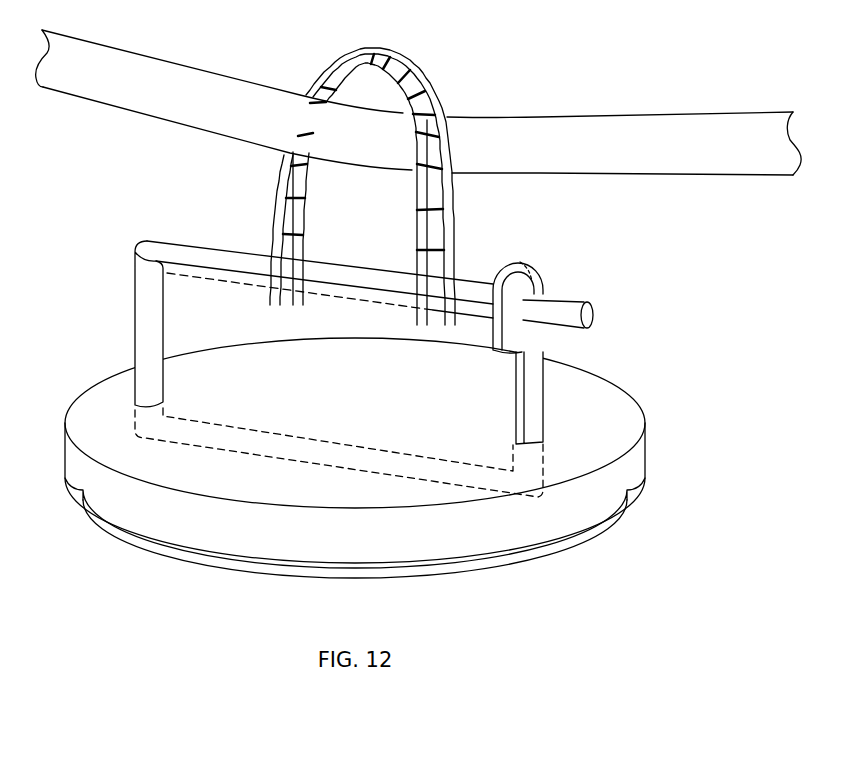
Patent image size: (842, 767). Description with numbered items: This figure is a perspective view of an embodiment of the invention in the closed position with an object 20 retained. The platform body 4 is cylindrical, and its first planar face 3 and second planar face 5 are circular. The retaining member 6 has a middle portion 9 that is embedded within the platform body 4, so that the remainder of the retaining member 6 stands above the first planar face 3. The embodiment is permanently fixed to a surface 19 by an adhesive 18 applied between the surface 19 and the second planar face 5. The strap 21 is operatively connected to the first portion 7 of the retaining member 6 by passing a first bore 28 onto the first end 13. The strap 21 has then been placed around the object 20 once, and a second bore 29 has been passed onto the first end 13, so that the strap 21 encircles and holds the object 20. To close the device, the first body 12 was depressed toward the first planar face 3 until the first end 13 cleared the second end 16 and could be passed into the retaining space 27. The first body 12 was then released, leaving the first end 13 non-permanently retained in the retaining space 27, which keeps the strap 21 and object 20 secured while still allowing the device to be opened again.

The first planar face 3 is at (618, 422).
The platform body 4 is at (633, 472).
The second planar face 5 is at (633, 510).
The retaining member 6 is at (70, 309).
The first portion 7 is at (122, 213).
The middle portion 9 is at (247, 453).
The first body 12 is at (228, 253).
The first end 13 is at (572, 298).
The second end 16 is at (513, 334).
The adhesive 18 is at (448, 563).
The surface 19 is at (433, 614).
The object 20 is at (720, 142).
The strap 21 is at (421, 72).
The retaining space 27 is at (528, 288).
The first bore 28 is at (320, 252).
The second bore 29 is at (452, 272).